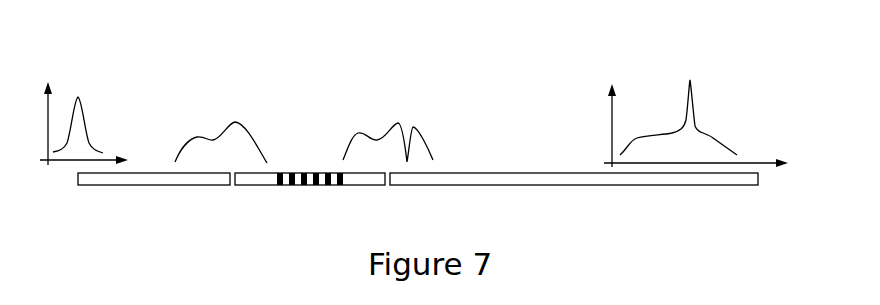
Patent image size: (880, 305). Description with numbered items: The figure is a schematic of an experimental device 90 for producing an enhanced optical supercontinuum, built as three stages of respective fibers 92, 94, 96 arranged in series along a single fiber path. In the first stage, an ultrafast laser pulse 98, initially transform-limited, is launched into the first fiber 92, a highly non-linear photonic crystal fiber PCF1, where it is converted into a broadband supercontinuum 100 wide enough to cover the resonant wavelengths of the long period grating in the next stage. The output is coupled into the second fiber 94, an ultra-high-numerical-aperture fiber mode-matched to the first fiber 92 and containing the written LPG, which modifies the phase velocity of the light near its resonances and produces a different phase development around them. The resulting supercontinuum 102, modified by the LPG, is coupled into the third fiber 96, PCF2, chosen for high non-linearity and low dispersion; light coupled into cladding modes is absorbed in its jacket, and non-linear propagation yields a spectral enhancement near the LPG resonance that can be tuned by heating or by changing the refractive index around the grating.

The experimental device 90 is at (663, 45).
The first fiber 92 is at (98, 187).
The second fiber 94 is at (258, 187).
The third fiber 96 is at (720, 187).
The ultrafast laser pulse 98 is at (100, 125).
The broadband supercontinuum 100 is at (208, 120).
The supercontinuum modified by the LPG 102 is at (437, 138).